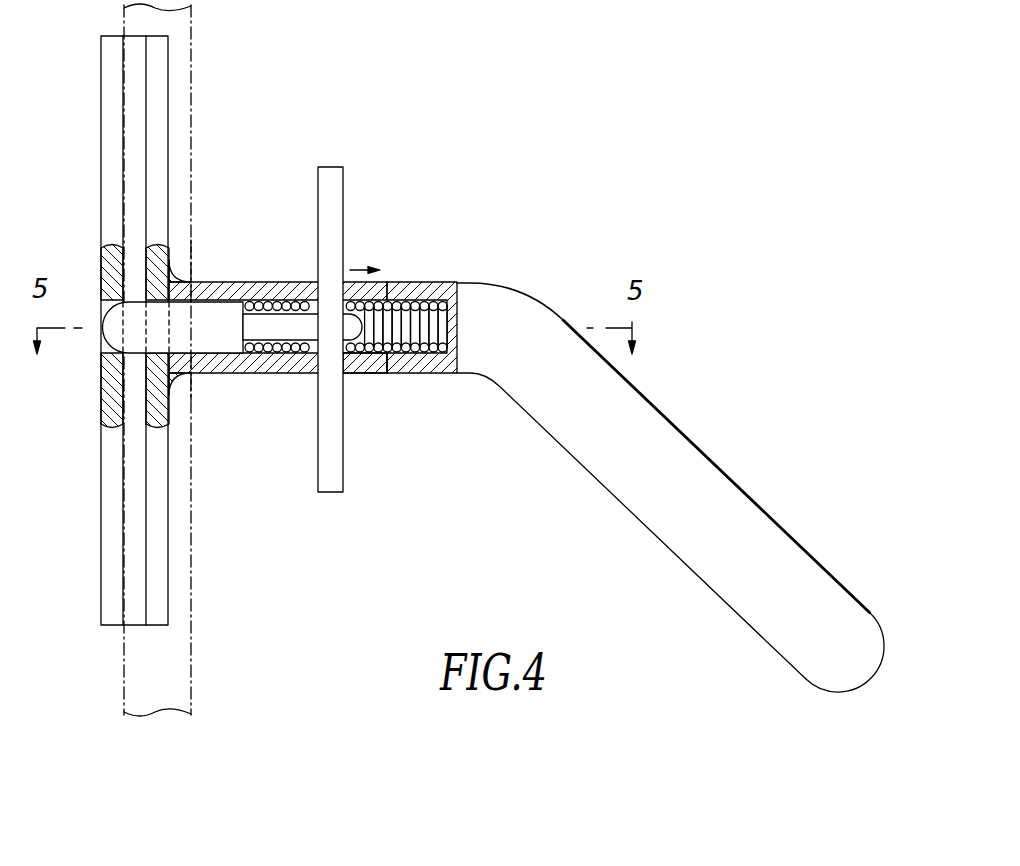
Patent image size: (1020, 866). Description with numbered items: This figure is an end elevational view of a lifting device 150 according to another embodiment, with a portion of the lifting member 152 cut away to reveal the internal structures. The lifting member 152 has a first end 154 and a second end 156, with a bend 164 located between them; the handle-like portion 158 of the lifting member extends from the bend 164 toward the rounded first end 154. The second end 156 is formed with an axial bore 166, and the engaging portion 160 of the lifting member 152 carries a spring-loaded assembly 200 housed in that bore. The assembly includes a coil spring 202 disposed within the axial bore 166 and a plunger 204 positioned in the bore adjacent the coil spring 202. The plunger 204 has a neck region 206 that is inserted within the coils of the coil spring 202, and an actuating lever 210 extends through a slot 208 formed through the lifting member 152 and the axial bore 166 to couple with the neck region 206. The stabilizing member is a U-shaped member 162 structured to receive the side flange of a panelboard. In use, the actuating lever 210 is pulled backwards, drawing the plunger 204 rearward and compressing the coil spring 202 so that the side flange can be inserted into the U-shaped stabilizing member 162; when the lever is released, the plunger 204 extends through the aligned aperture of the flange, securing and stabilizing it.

The lifting device 150 is at (382, 605).
The lifting member 152 is at (538, 208).
The first end 154 is at (824, 701).
The second end 156 is at (215, 234).
The handle arm 158 is at (706, 489).
The engaging portion 160 is at (124, 366).
The U-shaped stabilizing member 162 is at (130, 642).
The bend 164 is at (517, 308).
The axial bore 166 is at (222, 358).
The spring-loaded assembly 200 is at (408, 283).
The coil spring 202 is at (450, 322).
The plunger 204 is at (213, 317).
The neck region 206 is at (292, 332).
The slot 208 is at (376, 358).
The actuating lever 210 is at (328, 173).